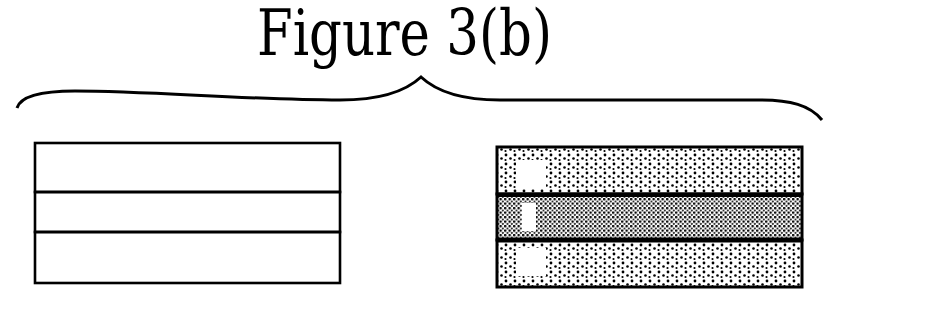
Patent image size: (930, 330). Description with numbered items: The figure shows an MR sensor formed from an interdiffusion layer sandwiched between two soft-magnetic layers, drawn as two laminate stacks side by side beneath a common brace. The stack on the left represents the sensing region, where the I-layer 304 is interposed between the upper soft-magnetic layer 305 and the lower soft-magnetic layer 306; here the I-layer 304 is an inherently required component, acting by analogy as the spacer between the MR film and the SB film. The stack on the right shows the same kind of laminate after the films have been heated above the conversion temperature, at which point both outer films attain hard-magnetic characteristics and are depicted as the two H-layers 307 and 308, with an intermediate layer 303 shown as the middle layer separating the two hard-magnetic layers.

The upper H layer 303 is at (777, 189).
The I-layer 304 is at (315, 229).
The S2 layer 305 is at (315, 184).
The S1 layer 306 is at (315, 274).
The H-layer 307 is at (804, 220).
The H-layer 308 is at (777, 277).